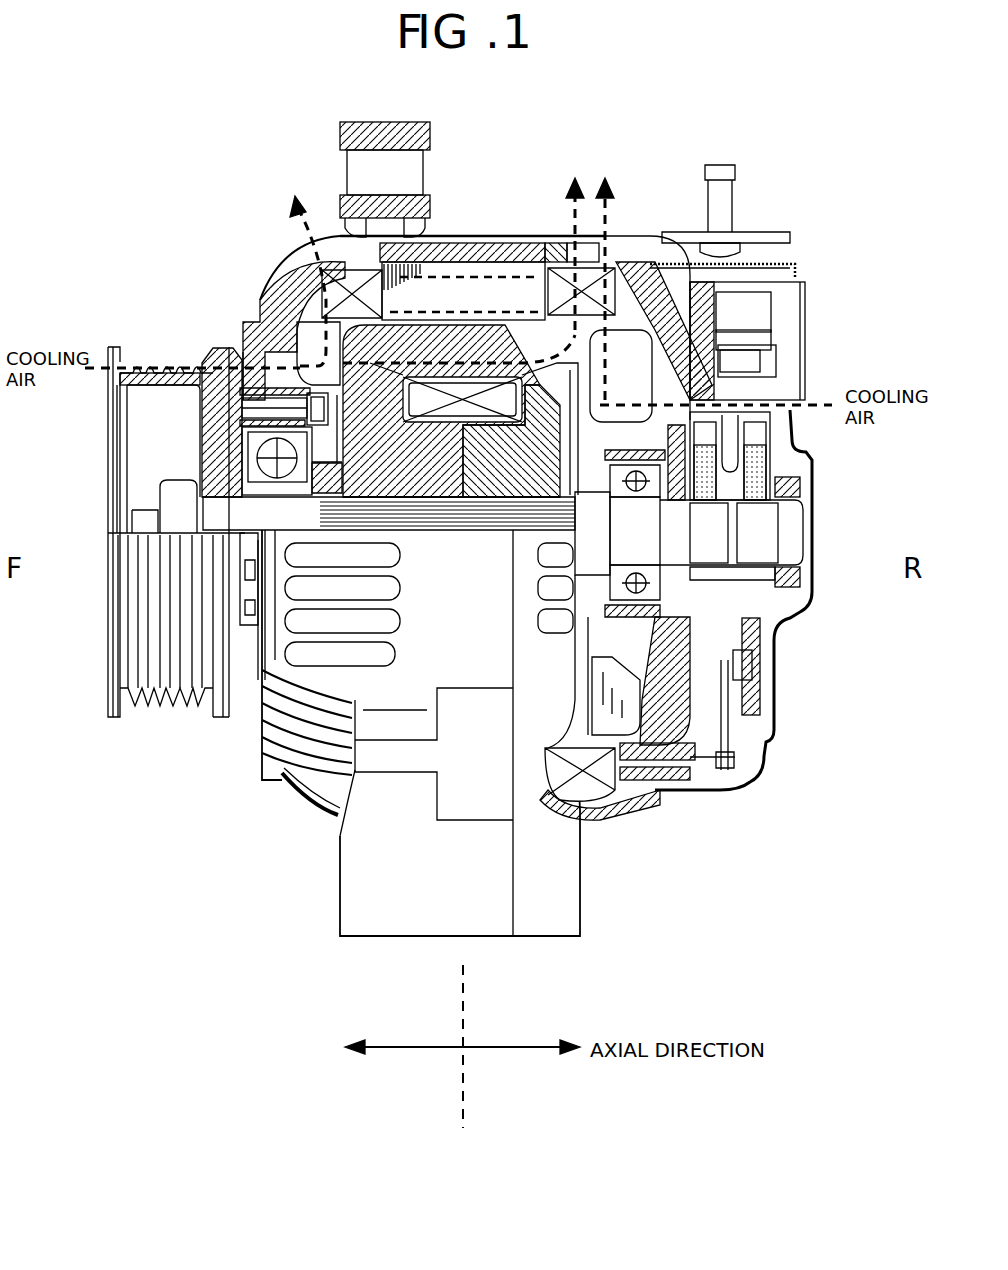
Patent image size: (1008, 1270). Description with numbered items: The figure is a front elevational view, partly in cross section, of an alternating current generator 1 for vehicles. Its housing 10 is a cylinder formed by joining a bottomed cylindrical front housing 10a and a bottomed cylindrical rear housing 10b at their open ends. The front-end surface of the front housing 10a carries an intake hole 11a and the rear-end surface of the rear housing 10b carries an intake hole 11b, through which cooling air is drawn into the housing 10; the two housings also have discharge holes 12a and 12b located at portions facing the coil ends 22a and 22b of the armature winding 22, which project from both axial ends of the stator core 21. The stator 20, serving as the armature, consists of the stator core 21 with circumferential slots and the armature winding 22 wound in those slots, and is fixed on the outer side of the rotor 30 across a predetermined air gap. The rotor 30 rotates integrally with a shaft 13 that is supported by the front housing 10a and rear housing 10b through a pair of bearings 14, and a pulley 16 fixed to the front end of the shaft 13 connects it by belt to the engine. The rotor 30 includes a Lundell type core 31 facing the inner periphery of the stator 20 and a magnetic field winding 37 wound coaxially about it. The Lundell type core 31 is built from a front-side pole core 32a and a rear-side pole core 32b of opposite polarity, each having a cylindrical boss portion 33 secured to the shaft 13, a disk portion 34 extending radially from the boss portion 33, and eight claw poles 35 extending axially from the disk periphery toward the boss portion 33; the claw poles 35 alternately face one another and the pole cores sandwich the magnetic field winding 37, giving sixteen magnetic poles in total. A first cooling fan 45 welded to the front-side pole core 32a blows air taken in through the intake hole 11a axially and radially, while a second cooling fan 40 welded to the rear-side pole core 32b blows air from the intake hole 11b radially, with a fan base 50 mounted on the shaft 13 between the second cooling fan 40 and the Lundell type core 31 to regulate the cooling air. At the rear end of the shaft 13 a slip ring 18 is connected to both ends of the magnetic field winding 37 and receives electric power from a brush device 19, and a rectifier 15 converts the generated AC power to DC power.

The alternating current generator 1 is at (177, 215).
The housing 10 is at (335, 865).
The front housing 10a is at (262, 372).
The rear housing 10b is at (690, 285).
The intake hole 11a is at (287, 370).
The intake hole 11b is at (795, 420).
The discharge hole 12a is at (302, 262).
The discharge hole 12b is at (640, 350).
The shaft 13 is at (238, 513).
The bearings 14 is at (238, 492).
The rectifier 15 is at (760, 713).
The pulley 16 is at (198, 430).
The slip ring 18 is at (780, 585).
The brush device 19 is at (790, 540).
The stator 20 is at (490, 250).
The stator core 21 is at (532, 298).
The armature winding 22 is at (535, 290).
The coil end 22a is at (345, 282).
The coil end 22b is at (597, 335).
The rotor 30 is at (585, 340).
The Lundell type core 31 is at (508, 595).
The front-side pole core 32a is at (440, 505).
The rear-side pole core 32b is at (505, 505).
The boss portion 33 is at (330, 540).
The disk portion 34 is at (200, 410).
The claw poles 35 is at (450, 340).
The magnetic field winding 37 is at (466, 388).
The second cooling fan 40 is at (700, 318).
The first cooling fan 45 is at (308, 350).
The fan base 50 is at (700, 368).